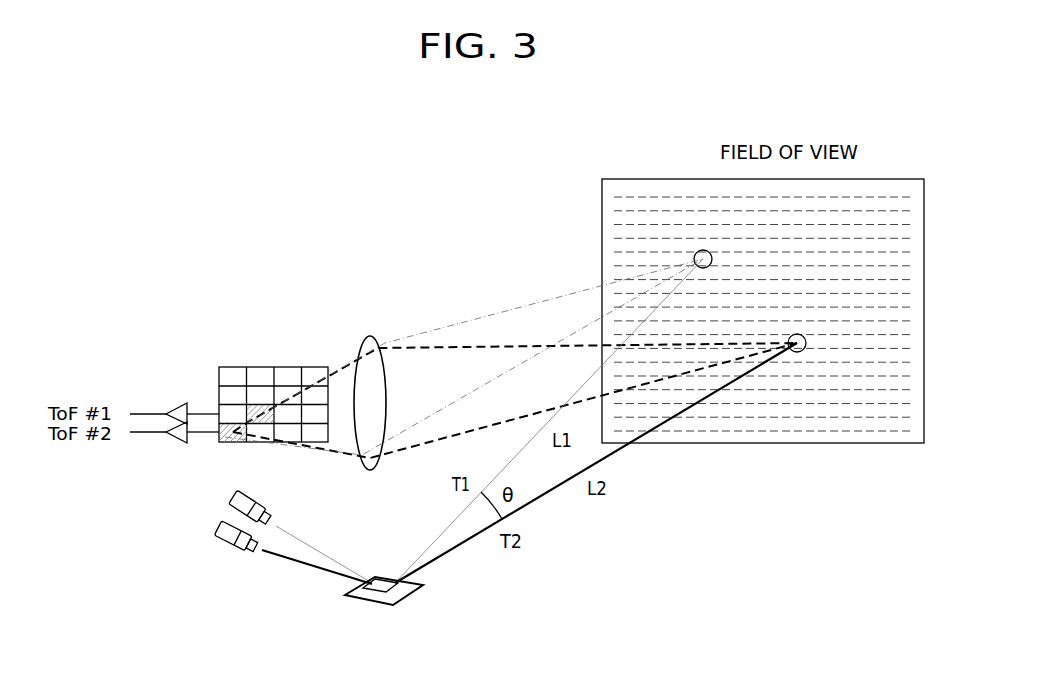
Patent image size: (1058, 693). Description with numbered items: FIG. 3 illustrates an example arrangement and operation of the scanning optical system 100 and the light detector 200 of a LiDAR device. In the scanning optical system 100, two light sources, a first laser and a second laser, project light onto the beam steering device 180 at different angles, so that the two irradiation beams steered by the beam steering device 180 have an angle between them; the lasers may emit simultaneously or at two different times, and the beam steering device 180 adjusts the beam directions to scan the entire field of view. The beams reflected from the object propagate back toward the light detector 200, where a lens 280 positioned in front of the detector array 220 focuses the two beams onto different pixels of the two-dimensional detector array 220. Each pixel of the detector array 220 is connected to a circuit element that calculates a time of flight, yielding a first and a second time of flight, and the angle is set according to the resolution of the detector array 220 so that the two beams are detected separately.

The scanning optical system 100 is at (283, 604).
The beam steering device 180 is at (366, 598).
The light detector 200 is at (323, 315).
The detector array 220 is at (235, 367).
The lens 280 is at (373, 362).